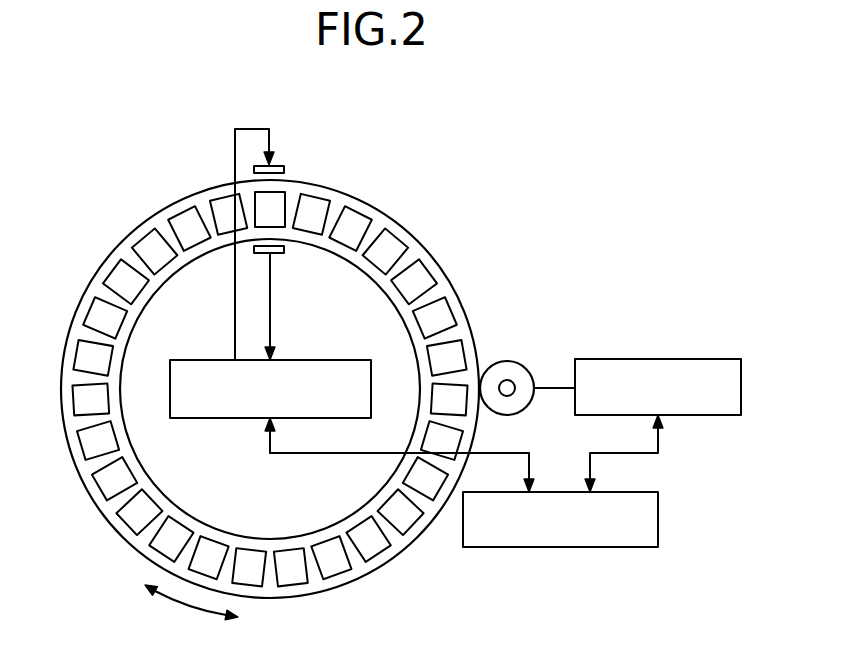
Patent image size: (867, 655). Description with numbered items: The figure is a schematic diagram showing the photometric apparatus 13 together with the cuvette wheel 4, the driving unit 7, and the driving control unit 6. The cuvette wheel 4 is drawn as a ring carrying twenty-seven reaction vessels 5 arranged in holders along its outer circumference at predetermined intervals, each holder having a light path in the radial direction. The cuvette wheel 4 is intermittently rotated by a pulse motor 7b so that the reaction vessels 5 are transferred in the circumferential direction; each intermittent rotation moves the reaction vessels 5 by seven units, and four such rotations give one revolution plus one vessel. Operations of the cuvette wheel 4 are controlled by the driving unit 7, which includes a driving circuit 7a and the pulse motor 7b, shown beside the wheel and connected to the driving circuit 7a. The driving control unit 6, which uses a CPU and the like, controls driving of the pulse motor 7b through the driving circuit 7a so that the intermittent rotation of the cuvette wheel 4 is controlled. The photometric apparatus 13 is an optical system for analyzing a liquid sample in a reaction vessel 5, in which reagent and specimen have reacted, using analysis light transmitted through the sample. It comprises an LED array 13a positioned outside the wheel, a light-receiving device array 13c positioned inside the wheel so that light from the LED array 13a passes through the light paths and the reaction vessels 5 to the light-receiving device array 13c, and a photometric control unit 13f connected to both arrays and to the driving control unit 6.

The cuvette wheel 4 is at (74, 316).
The reaction vessels 5 is at (183, 225).
The driving control unit 6 is at (598, 548).
The driving unit 7 is at (580, 302).
The driving circuit 7a is at (690, 359).
The pulse motor 7b is at (505, 361).
The photometric apparatus 13 is at (421, 253).
The LED array 13a is at (276, 163).
The light-receiving device array 13c is at (277, 254).
The photometric control unit 13f is at (337, 359).